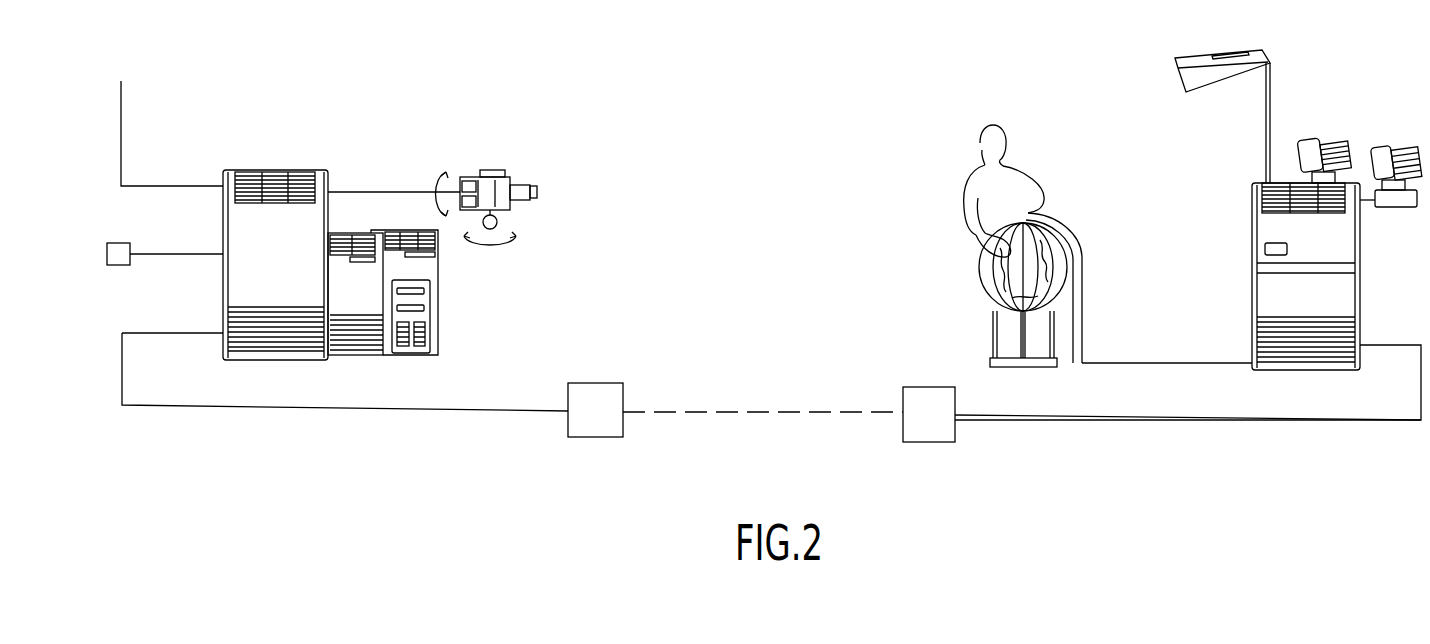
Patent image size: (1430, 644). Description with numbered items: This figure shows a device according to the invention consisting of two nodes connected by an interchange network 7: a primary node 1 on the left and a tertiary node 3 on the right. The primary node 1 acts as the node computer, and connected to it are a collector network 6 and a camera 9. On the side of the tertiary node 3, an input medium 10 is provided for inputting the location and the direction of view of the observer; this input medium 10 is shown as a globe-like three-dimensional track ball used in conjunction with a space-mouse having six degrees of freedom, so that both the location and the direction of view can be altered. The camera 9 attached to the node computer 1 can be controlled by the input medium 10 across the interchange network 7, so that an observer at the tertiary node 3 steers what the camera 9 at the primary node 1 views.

The primary node 1 is at (422, 300).
The tertiary node 3 is at (1340, 298).
The collector network 6 is at (106, 266).
The interchange network 7 is at (780, 412).
The camera 9 is at (505, 178).
The input medium 10 is at (1000, 273).